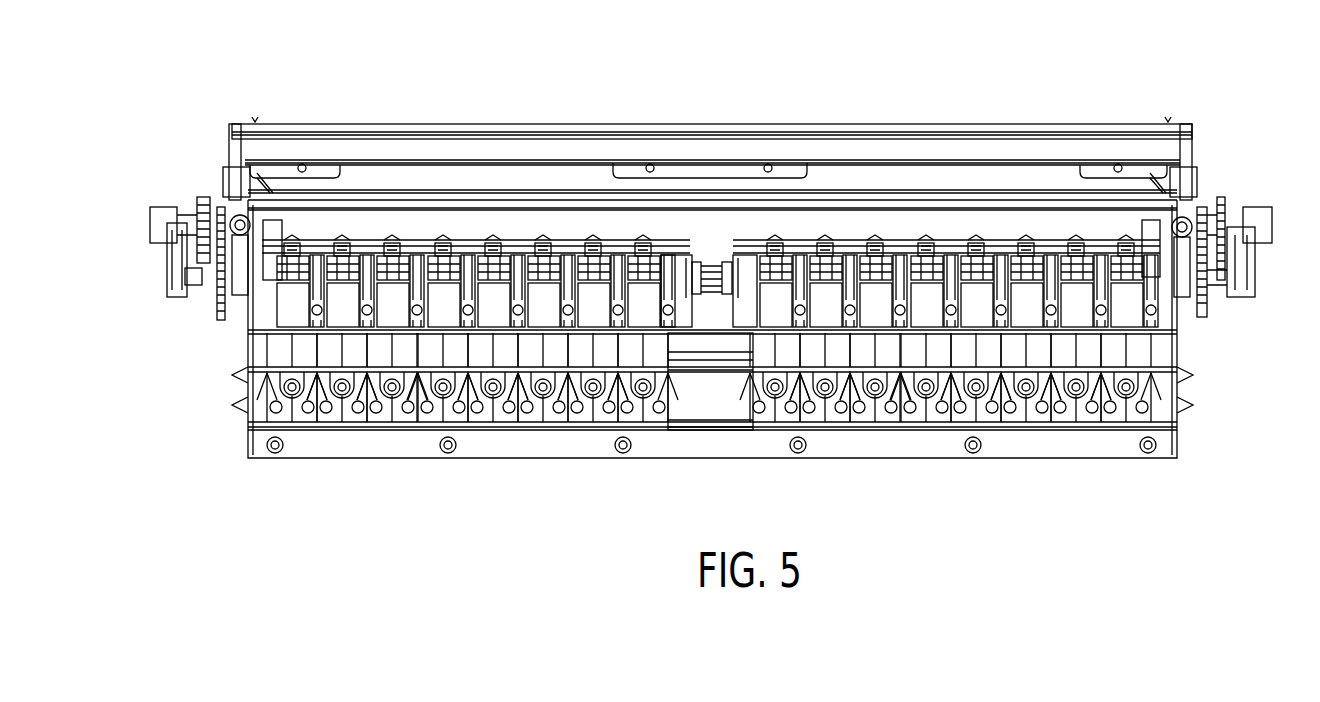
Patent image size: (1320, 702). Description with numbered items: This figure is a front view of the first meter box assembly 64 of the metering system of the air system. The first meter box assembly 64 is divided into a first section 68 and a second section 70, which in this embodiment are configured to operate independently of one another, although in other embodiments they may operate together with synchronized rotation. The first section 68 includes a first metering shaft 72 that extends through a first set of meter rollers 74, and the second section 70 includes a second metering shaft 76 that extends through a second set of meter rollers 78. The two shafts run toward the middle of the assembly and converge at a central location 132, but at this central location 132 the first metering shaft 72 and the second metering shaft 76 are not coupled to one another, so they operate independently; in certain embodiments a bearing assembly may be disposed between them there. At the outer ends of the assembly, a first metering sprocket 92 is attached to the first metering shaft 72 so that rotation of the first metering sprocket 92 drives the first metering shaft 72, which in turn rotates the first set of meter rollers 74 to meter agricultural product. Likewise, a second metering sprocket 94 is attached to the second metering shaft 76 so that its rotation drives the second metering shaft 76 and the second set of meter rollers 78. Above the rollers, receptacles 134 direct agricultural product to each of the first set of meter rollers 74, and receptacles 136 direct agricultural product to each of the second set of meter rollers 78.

The first meter box assembly 64 is at (182, 122).
The first section 68 is at (967, 467).
The second section 70 is at (455, 467).
The first metering shaft 72 is at (851, 280).
The first set of meter rollers 74 is at (1078, 283).
The second metering shaft 76 is at (563, 290).
The second set of meter rollers 78 is at (393, 283).
The first metering sprocket 92 is at (1205, 305).
The second metering sprocket 94 is at (220, 307).
The central location 132 is at (706, 300).
The receptacles 134 is at (973, 293).
The receptacles 136 is at (447, 295).